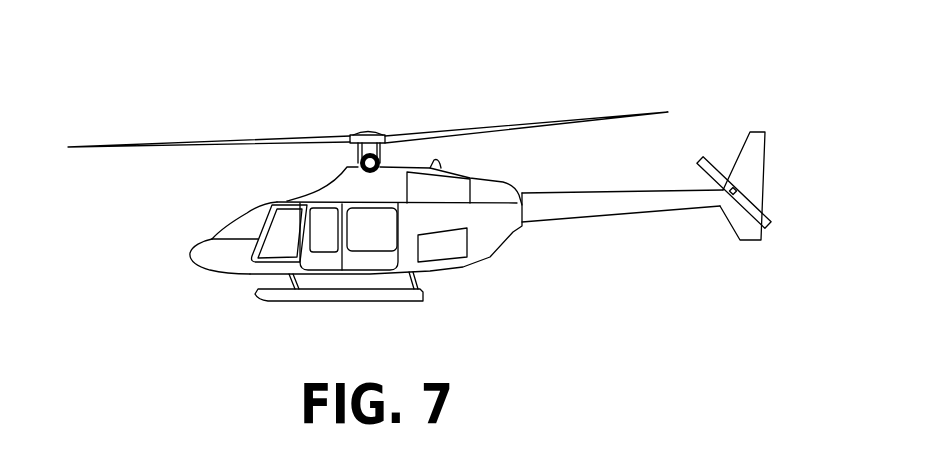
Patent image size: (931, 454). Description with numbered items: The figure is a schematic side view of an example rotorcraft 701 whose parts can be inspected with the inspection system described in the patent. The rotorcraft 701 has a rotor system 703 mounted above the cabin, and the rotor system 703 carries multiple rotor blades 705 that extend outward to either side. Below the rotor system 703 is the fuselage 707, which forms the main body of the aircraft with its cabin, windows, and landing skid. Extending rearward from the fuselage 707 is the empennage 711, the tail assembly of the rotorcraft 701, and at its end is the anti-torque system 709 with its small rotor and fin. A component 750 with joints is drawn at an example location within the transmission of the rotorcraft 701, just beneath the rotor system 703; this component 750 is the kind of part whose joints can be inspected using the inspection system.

The rotorcraft 701 is at (195, 88).
The rotor system 703 is at (381, 108).
The rotor blades 705 is at (612, 116).
The fuselage 707 is at (247, 273).
The anti-torque system 709 is at (776, 253).
The empennage 711 is at (601, 219).
The component 750 is at (355, 166).